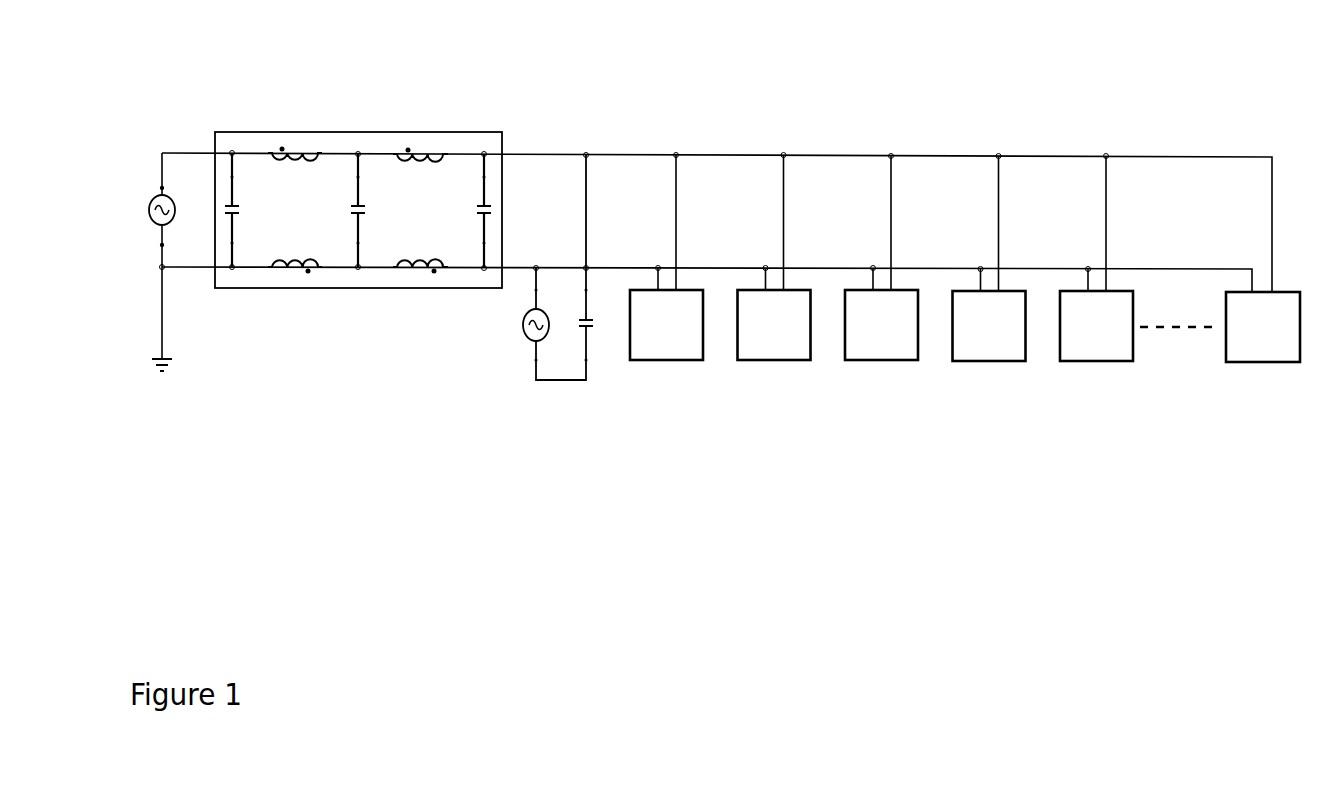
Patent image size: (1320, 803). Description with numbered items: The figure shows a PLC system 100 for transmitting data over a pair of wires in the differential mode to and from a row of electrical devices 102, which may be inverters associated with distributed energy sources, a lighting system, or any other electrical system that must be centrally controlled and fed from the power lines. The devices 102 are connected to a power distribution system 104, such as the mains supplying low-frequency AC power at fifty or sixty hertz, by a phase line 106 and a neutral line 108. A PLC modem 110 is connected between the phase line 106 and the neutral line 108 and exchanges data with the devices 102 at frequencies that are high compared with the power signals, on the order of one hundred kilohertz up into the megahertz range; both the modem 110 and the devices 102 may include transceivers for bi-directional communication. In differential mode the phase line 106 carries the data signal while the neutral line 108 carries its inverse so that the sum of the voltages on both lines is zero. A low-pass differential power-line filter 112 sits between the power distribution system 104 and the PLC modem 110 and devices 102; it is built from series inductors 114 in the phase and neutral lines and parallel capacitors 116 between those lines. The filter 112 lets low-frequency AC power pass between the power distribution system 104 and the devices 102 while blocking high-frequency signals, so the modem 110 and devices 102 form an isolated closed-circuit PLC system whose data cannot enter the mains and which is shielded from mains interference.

The PLC system 100 is at (707, 641).
The electrical devices 102 is at (965, 282).
The power distribution system 104 is at (143, 185).
The phase line 106 is at (1137, 155).
The neutral line 108 is at (1137, 268).
The PLC modem 110 is at (537, 381).
The low-pass differential power-line filter 112 is at (472, 128).
The series inductors 114 is at (278, 305).
The parallel capacitors 116 is at (388, 211).